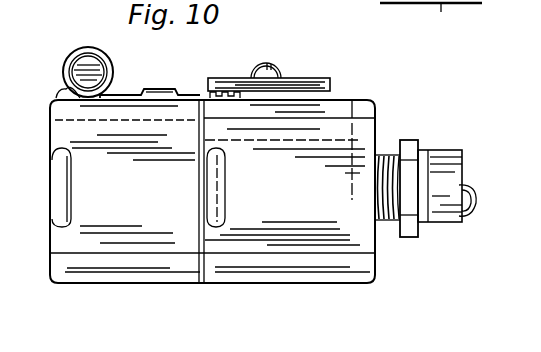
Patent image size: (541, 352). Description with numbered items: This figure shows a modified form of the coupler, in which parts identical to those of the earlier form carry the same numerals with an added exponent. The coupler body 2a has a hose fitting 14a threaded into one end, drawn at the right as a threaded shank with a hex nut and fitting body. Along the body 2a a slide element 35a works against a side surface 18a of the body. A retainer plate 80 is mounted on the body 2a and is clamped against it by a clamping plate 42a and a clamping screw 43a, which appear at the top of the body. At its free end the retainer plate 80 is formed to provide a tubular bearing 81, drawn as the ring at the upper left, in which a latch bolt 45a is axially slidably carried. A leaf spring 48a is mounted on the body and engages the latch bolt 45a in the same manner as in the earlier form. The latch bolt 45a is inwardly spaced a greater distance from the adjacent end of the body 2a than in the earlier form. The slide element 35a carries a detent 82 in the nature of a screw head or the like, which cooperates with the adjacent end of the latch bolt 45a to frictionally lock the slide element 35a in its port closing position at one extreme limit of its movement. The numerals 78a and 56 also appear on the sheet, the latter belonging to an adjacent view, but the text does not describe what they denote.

The coupler body 2a is at (376, 125).
The retainer plate 80 is at (340, 96).
The slide element 35a is at (160, 193).
The retaining tab 78a is at (55, 226).
The side surface 18a is at (283, 229).
The tubular bearing 81 is at (84, 47).
The latch bolt 45a is at (167, 50).
The detent 82 is at (62, 93).
The leaf spring 48a is at (128, 95).
The clamping plate 42a is at (305, 80).
The clamping screw 43a is at (322, 48).
The hose fitting 14a is at (411, 182).
The element 56 is at (431, 19).